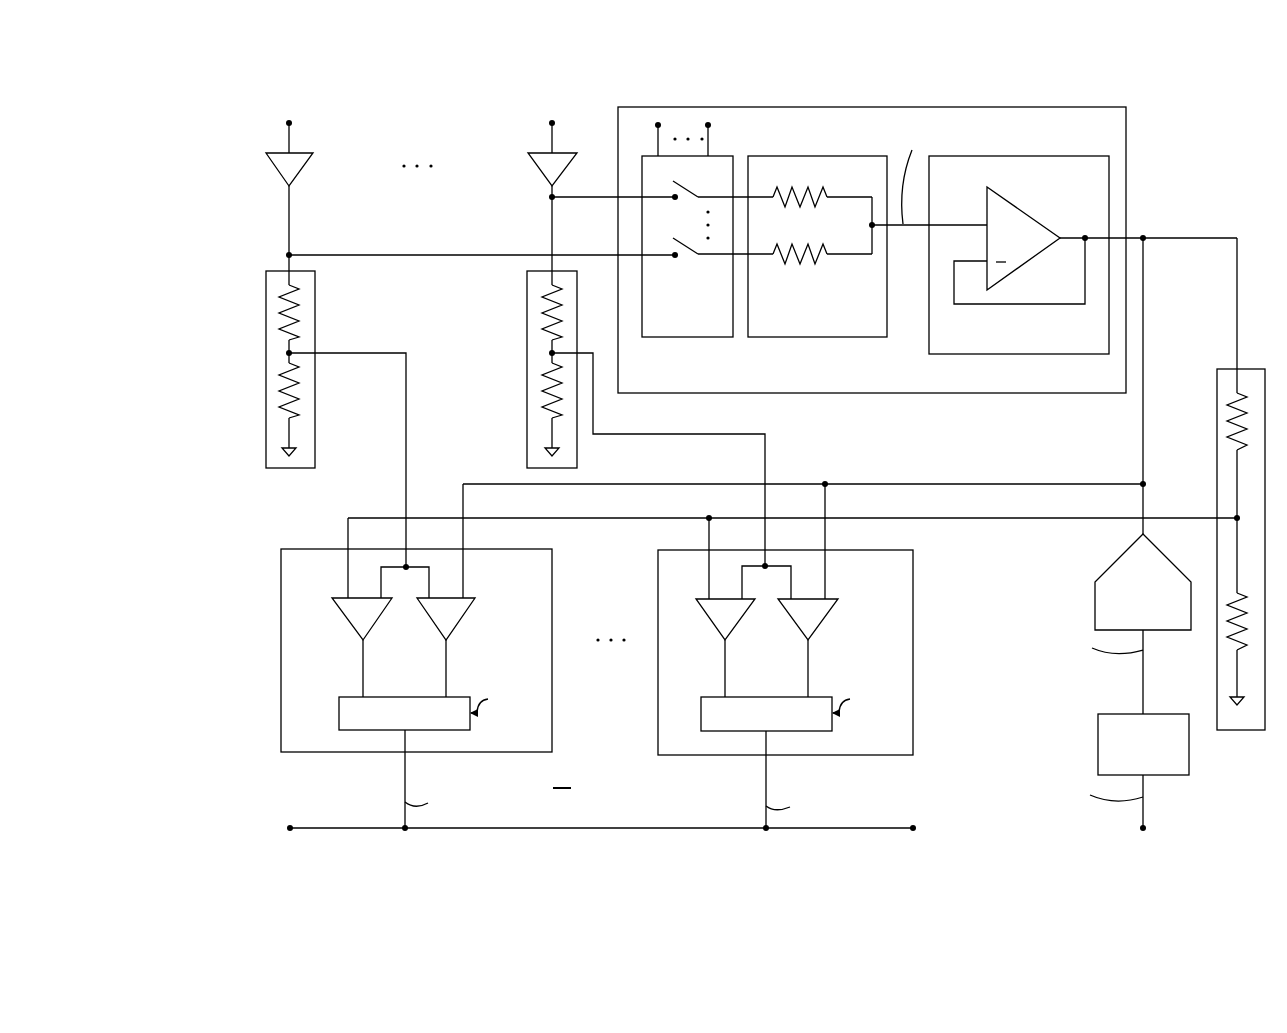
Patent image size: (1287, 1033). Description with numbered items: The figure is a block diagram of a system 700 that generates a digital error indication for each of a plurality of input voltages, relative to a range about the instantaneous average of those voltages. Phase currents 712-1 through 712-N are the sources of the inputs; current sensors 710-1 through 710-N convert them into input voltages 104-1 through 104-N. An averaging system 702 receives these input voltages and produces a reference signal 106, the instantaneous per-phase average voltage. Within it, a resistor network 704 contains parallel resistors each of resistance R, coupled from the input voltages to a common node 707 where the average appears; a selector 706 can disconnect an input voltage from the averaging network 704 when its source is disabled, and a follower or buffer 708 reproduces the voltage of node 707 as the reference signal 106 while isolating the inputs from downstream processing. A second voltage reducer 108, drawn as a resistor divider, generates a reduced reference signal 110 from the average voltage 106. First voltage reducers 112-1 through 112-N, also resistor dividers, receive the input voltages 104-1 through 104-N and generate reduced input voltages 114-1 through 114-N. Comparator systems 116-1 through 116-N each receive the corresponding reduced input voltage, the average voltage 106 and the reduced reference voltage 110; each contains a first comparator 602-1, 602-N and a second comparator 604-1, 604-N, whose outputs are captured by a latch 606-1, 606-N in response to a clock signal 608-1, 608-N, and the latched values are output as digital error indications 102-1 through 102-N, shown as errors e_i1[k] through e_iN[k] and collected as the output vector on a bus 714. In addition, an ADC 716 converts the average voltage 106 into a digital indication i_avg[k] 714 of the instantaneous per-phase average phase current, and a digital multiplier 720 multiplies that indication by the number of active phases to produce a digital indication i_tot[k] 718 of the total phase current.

The system 700 is at (280, 80).
The phase current 712-1 is at (296, 124).
The phase current 712-N is at (545, 124).
The current sensor 710-1 is at (300, 174).
The current sensor 710-N is at (545, 182).
The input voltage 104-1 is at (291, 226).
The input voltage 104-N is at (551, 226).
The first voltage reducer 112-1 is at (347, 303).
The first voltage reducer 112-N is at (527, 328).
The reduced input voltage 114-1 is at (407, 458).
The reduced input voltage 114-N is at (765, 460).
The averaging system 702 is at (964, 384).
The resistor network 704 is at (864, 327).
The selector 706 is at (673, 327).
The node 707 is at (870, 227).
The follower or buffer 708 is at (1099, 344).
The reference signal 106 is at (1143, 236).
The second voltage reducer 108 is at (1217, 432).
The reduced reference signal 110 is at (1028, 519).
The ADC 716 is at (1127, 554).
The digital indication i_avg[k] / bus 714 is at (1143, 690).
The digital multiplier 720 is at (1098, 728).
The digital indication i_tot[k] 718 is at (1143, 828).
The comparator system 116-1 is at (390, 657).
The comparator system 116-N is at (731, 685).
The first comparator 602-1 is at (355, 632).
The first comparator 602-N is at (712, 622).
The second comparator 604-1 is at (460, 622).
The second comparator 604-N is at (829, 612).
The latch 606-1 is at (452, 722).
The latch 606-N is at (766, 714).
The clock signal 608-1 is at (507, 705).
The clock signal 608-N is at (868, 705).
The digital error indication 102-1 is at (405, 788).
The digital error indication 102-N is at (787, 781).